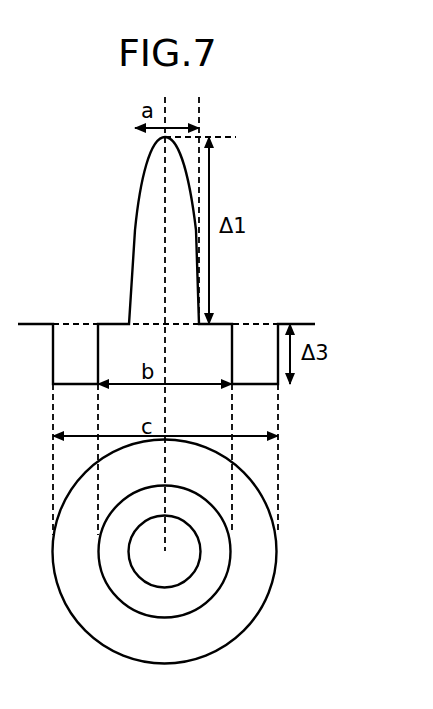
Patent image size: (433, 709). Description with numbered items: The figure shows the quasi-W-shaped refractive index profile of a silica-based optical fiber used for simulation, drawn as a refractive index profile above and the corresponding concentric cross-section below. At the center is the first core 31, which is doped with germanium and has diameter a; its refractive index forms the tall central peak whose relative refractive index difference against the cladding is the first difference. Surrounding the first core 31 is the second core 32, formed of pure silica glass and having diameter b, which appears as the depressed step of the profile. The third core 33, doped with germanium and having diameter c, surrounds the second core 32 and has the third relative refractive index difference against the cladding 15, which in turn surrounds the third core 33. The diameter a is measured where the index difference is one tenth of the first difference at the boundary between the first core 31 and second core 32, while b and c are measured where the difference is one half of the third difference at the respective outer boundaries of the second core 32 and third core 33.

The cladding 15 is at (295, 551).
The first core 31 is at (165, 571).
The second core 32 is at (208, 577).
The third core 33 is at (262, 570).